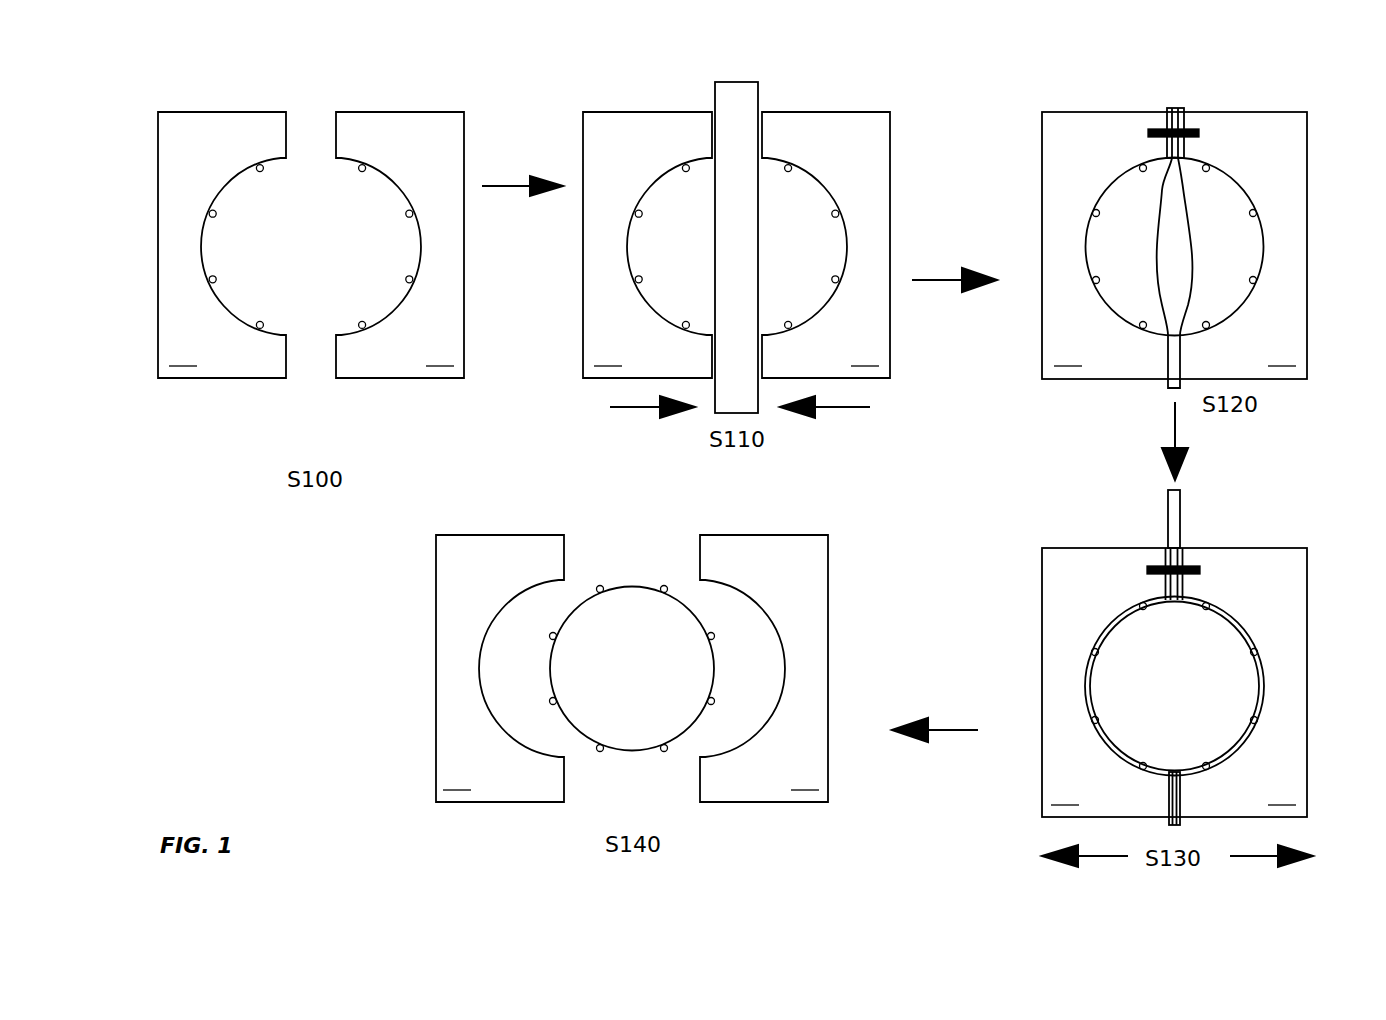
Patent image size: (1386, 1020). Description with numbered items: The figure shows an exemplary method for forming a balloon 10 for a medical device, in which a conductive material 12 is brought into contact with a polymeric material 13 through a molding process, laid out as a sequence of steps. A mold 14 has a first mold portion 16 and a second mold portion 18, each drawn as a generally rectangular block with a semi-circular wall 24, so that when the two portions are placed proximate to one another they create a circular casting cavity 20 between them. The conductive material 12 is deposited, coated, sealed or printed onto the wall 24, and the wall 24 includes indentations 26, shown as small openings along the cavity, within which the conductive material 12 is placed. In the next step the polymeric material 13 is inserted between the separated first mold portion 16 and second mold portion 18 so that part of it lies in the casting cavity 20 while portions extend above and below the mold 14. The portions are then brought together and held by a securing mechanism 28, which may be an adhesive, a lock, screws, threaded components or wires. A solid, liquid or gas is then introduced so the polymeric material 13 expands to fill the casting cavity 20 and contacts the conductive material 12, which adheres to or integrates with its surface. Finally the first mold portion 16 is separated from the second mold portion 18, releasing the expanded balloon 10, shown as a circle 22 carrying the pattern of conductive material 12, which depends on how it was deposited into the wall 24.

The balloon 10 is at (734, 439).
The conductive material 12 is at (678, 467).
The polymeric material 13 is at (952, 446).
The mold 14 is at (465, 388).
The first mold portion 16 is at (816, 459).
The second mold portion 18 is at (620, 459).
The casting cavity 20 is at (780, 200).
The molded article 22 is at (627, 602).
The wall 24 is at (747, 476).
The indentation 26 is at (671, 323).
The securing mechanism 28 is at (1258, 360).